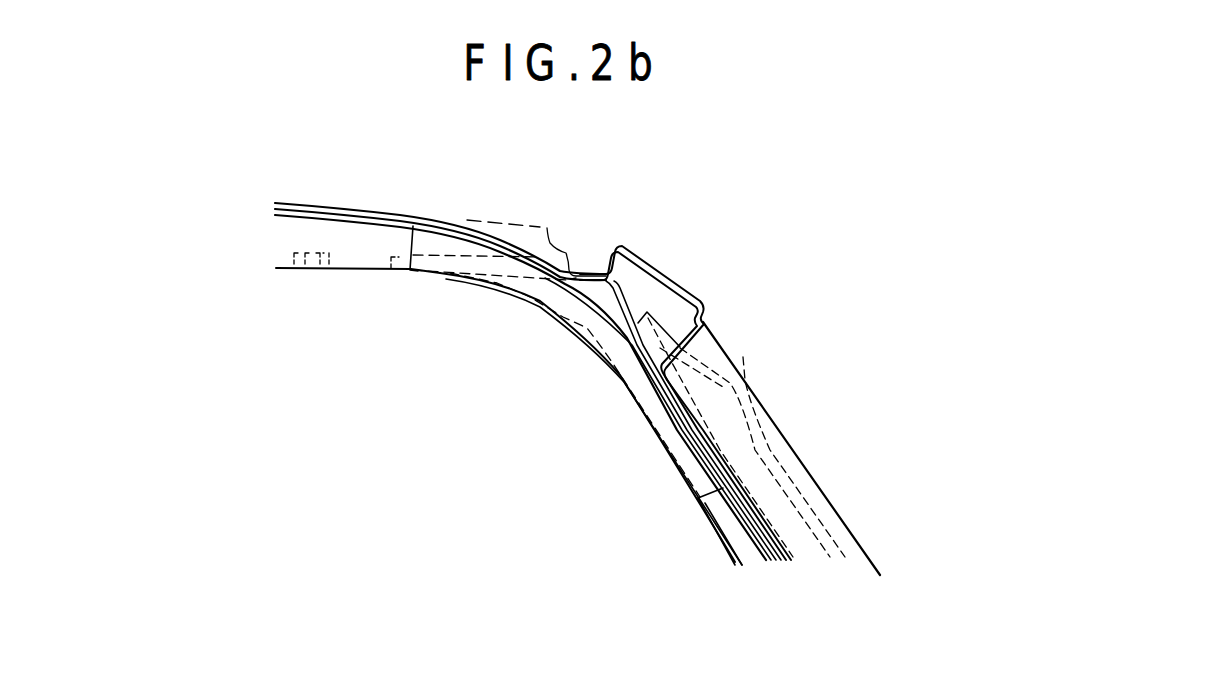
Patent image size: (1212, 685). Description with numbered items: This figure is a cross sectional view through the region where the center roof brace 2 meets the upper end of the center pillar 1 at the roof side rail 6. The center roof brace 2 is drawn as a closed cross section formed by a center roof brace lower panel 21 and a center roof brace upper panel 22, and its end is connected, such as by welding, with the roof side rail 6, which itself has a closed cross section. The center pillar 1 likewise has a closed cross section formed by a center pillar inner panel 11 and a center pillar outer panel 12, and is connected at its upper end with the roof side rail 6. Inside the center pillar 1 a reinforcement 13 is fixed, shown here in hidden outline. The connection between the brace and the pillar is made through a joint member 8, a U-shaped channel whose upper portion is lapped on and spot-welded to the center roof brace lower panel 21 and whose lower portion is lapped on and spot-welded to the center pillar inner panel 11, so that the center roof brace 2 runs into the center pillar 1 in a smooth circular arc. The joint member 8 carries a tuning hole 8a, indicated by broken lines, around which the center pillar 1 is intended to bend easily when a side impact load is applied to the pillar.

The center pillar 1 is at (765, 390).
The center roof brace 2 is at (336, 284).
The roof side rail 6 is at (683, 282).
The joint member 8 is at (540, 292).
The tuning hole 8a is at (577, 325).
The center pillar inner panel 11 is at (723, 508).
The center pillar outer panel 12 is at (775, 435).
The reinforcement 13 is at (743, 357).
The center roof brace lower panel 21 is at (377, 255).
The center roof brace upper panel 22 is at (397, 213).